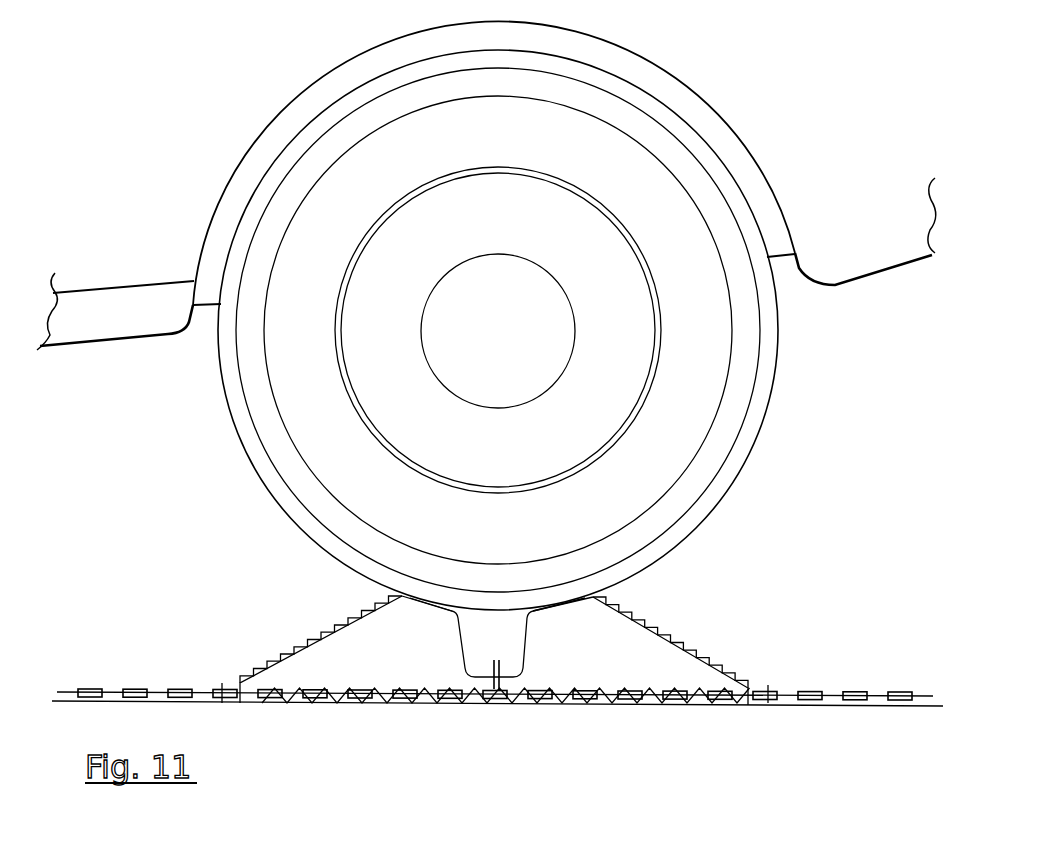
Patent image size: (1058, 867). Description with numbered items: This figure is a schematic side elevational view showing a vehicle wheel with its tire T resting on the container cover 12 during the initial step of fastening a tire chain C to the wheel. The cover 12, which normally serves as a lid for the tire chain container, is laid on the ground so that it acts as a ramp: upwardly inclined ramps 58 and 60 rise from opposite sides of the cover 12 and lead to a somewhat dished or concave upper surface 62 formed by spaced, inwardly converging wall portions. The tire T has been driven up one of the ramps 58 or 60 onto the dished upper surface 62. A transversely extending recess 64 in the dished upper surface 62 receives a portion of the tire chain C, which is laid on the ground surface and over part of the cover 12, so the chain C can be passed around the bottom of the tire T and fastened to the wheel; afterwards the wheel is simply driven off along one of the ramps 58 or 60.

The vehicle tire T is at (765, 420).
The cover 12 is at (497, 614).
The upwardly inclined ramp 58 is at (350, 617).
The upwardly inclined ramp 60 is at (683, 632).
The dished upper surface 62 is at (428, 600).
The transversely extending recess 64 is at (527, 633).
The tire chain C is at (140, 687).